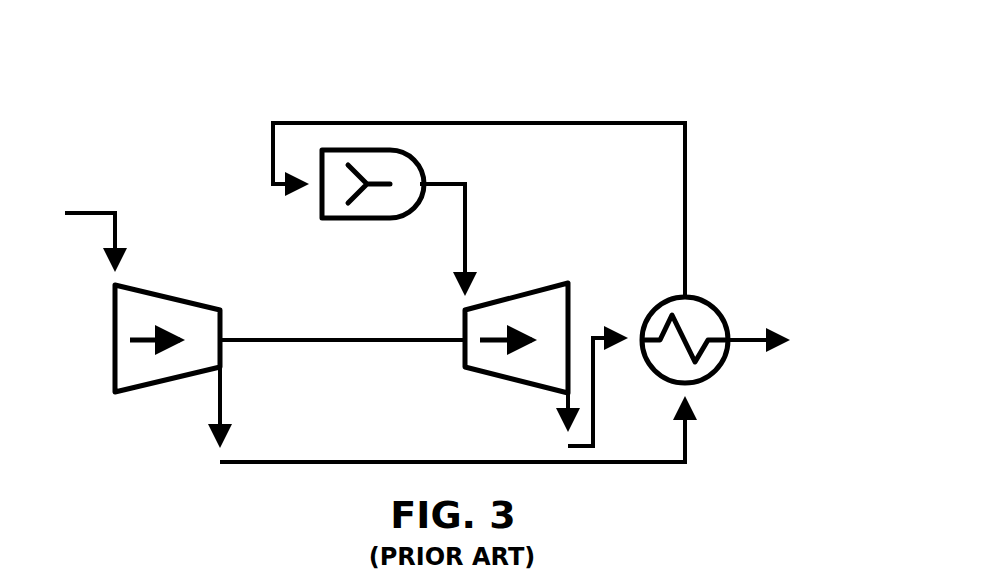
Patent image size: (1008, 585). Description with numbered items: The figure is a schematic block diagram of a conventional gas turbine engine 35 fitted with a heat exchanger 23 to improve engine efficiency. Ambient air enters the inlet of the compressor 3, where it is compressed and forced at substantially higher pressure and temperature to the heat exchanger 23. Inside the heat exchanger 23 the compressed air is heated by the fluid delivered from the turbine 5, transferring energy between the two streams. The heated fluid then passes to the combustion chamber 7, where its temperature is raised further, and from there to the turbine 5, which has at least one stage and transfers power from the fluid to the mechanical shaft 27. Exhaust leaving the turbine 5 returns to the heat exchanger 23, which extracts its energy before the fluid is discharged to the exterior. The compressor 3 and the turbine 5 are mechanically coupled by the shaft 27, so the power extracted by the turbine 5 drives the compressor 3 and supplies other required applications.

The compressor 3 is at (143, 392).
The turbine 5 is at (568, 300).
The combustion chamber 7 is at (358, 218).
The heat exchanger 23 is at (700, 297).
The shaft 27 is at (376, 343).
The gas turbine engine 35 is at (526, 102).